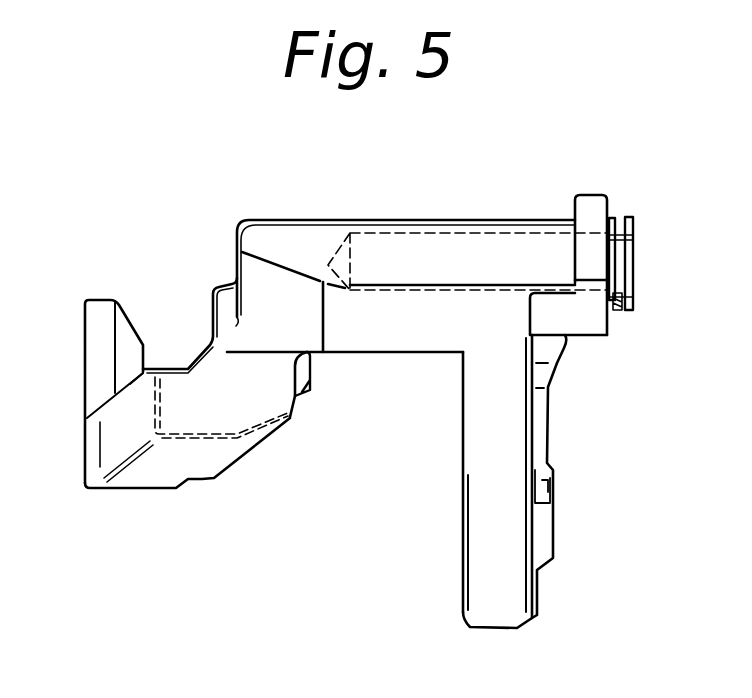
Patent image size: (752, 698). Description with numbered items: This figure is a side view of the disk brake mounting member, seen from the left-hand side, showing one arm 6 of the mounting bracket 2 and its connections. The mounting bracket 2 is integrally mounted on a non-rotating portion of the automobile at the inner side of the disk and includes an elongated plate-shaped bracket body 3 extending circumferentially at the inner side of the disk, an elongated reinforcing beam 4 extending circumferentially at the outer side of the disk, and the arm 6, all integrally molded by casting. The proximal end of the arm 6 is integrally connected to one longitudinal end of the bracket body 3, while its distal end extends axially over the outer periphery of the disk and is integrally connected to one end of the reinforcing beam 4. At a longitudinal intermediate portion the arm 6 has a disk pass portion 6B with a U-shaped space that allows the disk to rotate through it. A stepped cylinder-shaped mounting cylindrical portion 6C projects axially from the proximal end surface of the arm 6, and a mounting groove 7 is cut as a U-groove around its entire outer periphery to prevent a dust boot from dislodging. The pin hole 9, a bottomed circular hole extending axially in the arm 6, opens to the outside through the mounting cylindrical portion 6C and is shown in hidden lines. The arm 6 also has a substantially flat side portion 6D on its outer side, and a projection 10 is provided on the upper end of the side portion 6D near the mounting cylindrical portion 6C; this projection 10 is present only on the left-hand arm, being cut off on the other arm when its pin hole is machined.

The mounting bracket 2 is at (253, 218).
The bracket body 3 is at (482, 614).
The reinforcing beam 4 is at (103, 352).
The arm 6 is at (333, 219).
The disk pass portion 6B is at (312, 377).
The mounting cylindrical portion 6C is at (630, 220).
The side portion 6D is at (402, 352).
The mounting groove 7 is at (615, 312).
The pin hole 9 is at (470, 237).
The projection 10 is at (592, 267).